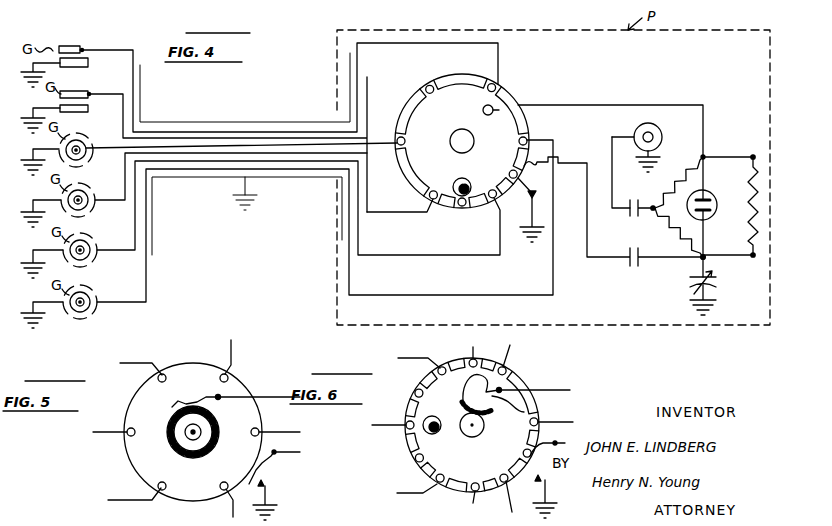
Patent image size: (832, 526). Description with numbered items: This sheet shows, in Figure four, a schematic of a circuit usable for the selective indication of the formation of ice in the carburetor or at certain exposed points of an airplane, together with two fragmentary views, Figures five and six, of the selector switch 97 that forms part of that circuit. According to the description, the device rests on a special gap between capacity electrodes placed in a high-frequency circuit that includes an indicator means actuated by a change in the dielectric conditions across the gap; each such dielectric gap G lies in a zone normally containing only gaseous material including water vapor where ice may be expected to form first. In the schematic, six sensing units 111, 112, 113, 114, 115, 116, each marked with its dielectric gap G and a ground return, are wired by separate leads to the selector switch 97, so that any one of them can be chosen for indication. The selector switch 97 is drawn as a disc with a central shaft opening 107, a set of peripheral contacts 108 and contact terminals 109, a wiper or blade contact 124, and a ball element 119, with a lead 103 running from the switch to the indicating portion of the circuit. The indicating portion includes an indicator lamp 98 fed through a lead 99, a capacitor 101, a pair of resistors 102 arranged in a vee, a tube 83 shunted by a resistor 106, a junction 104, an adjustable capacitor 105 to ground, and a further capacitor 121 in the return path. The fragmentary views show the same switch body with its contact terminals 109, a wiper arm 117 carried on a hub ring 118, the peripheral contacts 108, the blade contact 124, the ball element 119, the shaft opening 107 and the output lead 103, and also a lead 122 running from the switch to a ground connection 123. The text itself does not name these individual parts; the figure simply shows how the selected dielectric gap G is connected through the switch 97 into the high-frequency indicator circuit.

In FIG. 4, the thermocouple sensor 111 is at (82, 45).
In FIG. 4, the thermocouple sensor 112 is at (85, 91).
In FIG. 4, the coaxial sensor 113 is at (83, 134).
In FIG. 4, the coaxial sensor 114 is at (87, 187).
In FIG. 4, the coaxial sensor 115 is at (88, 239).
In FIG. 4, the coaxial sensor 116 is at (90, 293).
In FIG. 4, the rotary selector switch 97 is at (533, 83).
In FIG. 4, the shaft hole 107 is at (463, 119).
In FIG. 6, the shaft hole 107 is at (486, 465).
In FIG. 4, the switch contacts 108 is at (425, 90).
In FIG. 6, the switch contacts 108 is at (467, 426).
In FIG. 4, the switch blade contact 124 is at (510, 200).
In FIG. 6, the switch blade contact 124 is at (434, 481).
In FIG. 4, the ball detent 119 is at (462, 197).
In FIG. 6, the ball detent 119 is at (406, 430).
In FIG. 4, the wiper lead 103 is at (640, 107).
In FIG. 5, the wiper lead 103 is at (266, 391).
In FIG. 6, the wiper lead 103 is at (568, 390).
In FIG. 4, the indicator lamp 98 is at (662, 131).
In FIG. 4, the lead 99 is at (612, 163).
In FIG. 4, the capacitor 101 is at (636, 196).
In FIG. 4, the resistors 102 is at (676, 204).
In FIG. 4, the gas tube 83 is at (712, 193).
In FIG. 4, the resistor 106 is at (730, 206).
In FIG. 4, the junction 104 is at (707, 268).
In FIG. 4, the variable capacitor 105 is at (690, 280).
In FIG. 4, the capacitor 121 is at (633, 269).
In FIG. 5, the contact terminals 109 is at (117, 457).
In FIG. 6, the contact terminals 109 is at (508, 369).
In FIG. 5, the wiper arm 117 is at (190, 400).
In FIG. 5, the hub ring 118 is at (214, 423).
In FIG. 5, the lead 122 is at (272, 465).
In FIG. 6, the lead 122 is at (540, 471).
In FIG. 5, the ground connection 123 is at (270, 498).
In FIG. 6, the ground connection 123 is at (550, 492).